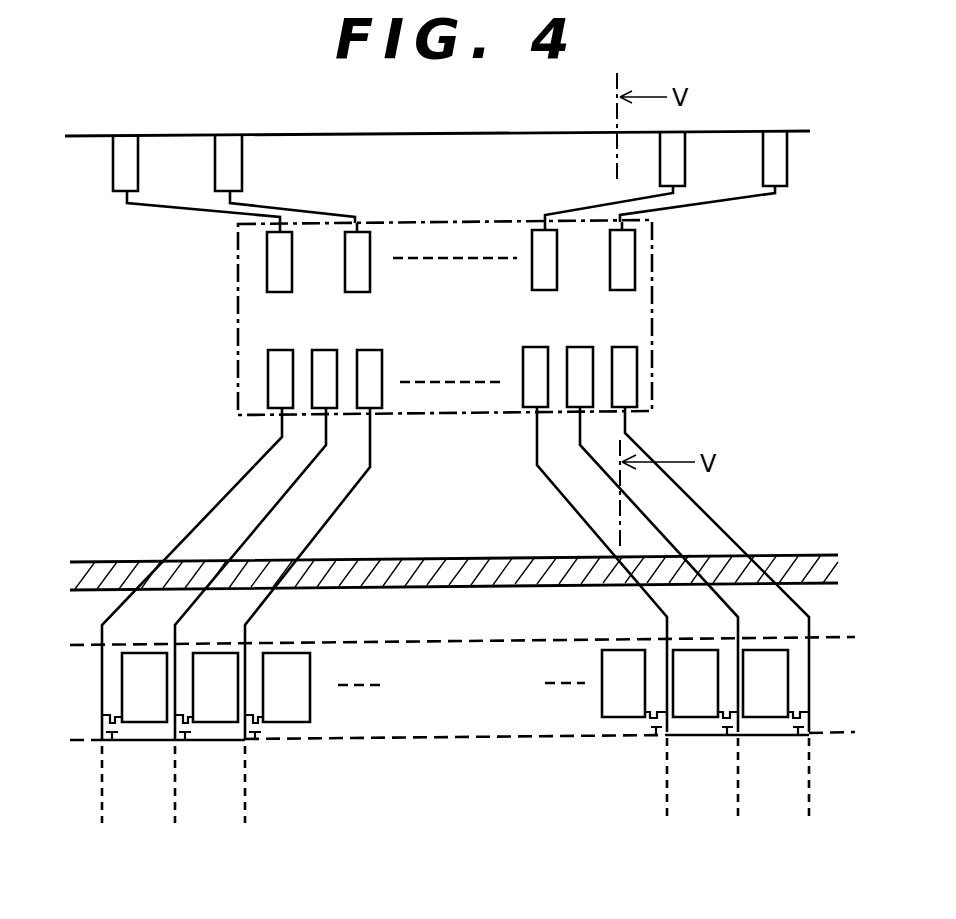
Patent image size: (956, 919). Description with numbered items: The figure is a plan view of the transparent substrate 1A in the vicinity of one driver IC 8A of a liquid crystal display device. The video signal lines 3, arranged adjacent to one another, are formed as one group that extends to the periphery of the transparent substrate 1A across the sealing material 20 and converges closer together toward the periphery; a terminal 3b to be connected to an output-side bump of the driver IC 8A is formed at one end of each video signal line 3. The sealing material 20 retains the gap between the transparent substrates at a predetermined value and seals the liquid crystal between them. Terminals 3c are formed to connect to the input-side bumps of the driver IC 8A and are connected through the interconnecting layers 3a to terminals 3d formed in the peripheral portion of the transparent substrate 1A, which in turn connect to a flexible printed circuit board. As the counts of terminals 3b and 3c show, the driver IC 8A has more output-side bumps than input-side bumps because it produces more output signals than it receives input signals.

The transparent substrate 1A is at (85, 135).
The terminals 3d is at (227, 143).
The interconnecting layers 3a is at (702, 207).
The terminals 3c is at (273, 258).
The driver IC 8A is at (652, 308).
The terminal 3b is at (322, 390).
The video signal lines 3 is at (282, 497).
The sealing material 20 is at (107, 560).